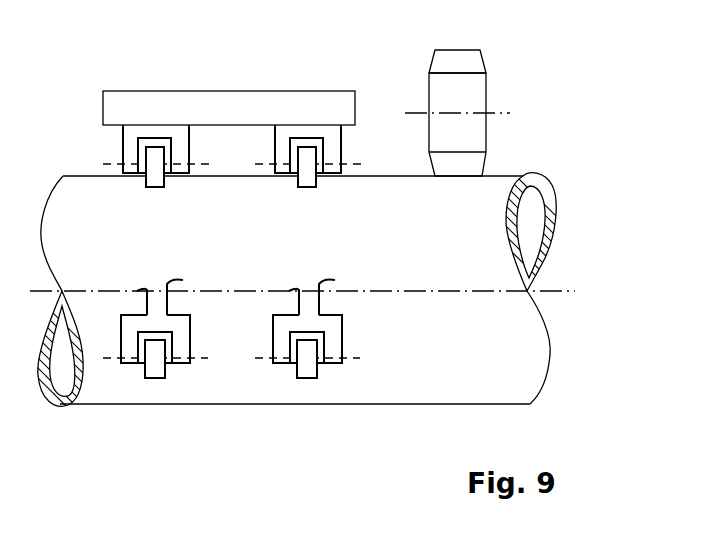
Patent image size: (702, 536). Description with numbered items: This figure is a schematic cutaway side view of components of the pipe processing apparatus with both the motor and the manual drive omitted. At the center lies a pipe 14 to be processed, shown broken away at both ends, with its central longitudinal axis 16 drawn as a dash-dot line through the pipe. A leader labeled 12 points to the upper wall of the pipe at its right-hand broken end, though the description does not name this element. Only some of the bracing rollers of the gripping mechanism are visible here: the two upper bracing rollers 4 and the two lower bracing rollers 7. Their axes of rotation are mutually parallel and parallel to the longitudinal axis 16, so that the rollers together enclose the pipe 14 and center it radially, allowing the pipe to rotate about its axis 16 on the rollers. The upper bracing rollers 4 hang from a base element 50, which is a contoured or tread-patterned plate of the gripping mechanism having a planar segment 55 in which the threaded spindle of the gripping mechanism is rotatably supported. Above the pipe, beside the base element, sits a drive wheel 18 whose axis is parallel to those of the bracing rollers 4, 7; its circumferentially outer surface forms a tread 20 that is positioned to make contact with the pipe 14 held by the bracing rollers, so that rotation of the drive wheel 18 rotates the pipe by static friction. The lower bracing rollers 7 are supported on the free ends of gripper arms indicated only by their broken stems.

The bracing roller 4 is at (155, 187).
The bracing roller 7 is at (153, 367).
The pipe / tubular body 12 is at (321, 280).
The pipe 14 is at (523, 365).
The central longitudinal axis 16 is at (568, 290).
The drive wheel 18 is at (488, 88).
The tread 20 is at (465, 49).
The base element 50 is at (229, 85).
The planar segment 55 is at (240, 105).